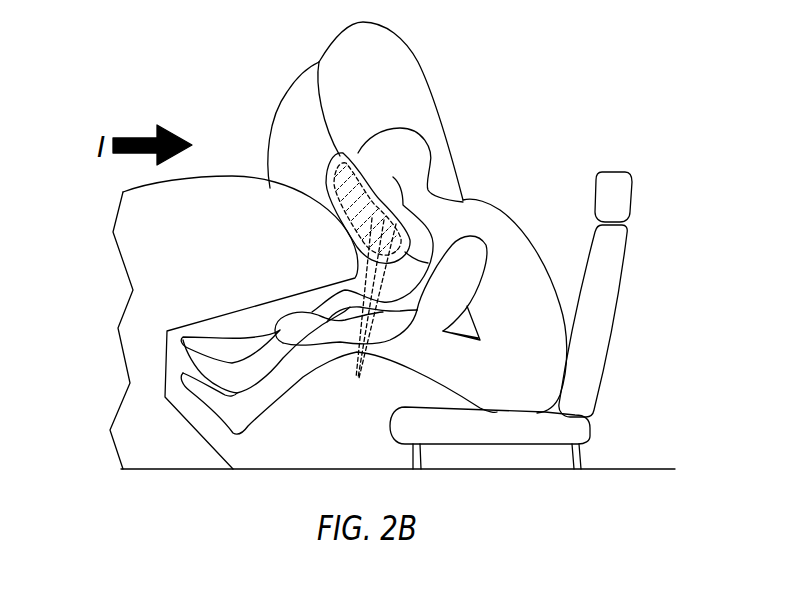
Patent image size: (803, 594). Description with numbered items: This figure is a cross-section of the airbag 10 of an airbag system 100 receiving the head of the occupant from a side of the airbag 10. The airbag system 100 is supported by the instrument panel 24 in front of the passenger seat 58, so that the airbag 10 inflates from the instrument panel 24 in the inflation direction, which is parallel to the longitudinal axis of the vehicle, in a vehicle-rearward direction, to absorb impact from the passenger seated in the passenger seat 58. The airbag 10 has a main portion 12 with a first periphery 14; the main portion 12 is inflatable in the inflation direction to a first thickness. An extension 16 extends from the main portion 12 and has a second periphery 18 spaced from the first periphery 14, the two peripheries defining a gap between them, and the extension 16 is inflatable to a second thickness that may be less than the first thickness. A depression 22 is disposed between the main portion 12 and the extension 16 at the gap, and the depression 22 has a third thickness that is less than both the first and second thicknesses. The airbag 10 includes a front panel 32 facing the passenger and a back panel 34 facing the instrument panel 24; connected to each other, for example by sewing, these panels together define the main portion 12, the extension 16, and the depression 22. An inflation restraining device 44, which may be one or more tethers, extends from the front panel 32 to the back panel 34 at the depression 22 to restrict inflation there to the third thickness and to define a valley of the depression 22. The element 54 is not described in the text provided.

The airbag system 100 is at (246, 42).
The airbag 10 is at (386, 206).
The main portion 12 is at (379, 89).
The first periphery 14 is at (422, 64).
The extension 16 is at (488, 211).
The second periphery 18 is at (327, 168).
The depression 22 is at (405, 258).
The instrument panel 24 is at (213, 261).
The front panel 32 is at (455, 144).
The back panel 34 is at (275, 112).
The inflation restraining device 44 is at (371, 310).
The vent 54 is at (348, 215).
The passenger seat 58 is at (600, 295).